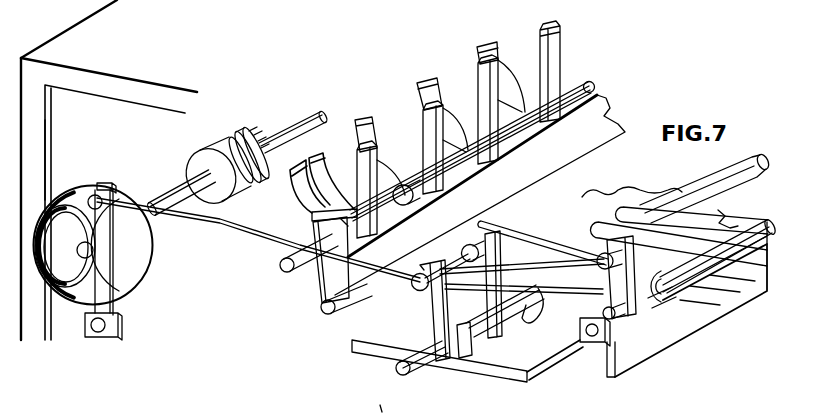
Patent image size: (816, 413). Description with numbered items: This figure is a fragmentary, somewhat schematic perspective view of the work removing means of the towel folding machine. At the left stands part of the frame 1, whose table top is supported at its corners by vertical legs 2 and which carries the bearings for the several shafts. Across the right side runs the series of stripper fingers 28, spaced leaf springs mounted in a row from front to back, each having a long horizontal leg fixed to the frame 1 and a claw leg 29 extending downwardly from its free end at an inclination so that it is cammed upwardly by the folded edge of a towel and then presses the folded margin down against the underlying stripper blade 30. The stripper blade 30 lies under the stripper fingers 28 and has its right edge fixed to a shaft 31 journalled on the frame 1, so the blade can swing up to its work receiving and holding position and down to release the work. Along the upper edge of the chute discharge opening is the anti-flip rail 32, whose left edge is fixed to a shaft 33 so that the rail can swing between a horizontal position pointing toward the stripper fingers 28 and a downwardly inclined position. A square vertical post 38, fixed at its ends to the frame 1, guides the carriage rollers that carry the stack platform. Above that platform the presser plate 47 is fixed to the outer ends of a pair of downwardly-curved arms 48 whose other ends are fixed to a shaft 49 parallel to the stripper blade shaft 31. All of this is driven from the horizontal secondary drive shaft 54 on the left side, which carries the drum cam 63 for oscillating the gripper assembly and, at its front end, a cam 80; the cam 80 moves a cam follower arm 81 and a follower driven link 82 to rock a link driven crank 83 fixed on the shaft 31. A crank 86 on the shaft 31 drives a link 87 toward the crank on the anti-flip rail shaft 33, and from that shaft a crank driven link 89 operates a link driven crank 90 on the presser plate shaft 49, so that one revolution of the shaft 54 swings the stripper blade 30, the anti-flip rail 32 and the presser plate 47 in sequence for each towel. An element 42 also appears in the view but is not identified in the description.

The frame 1 is at (163, 17).
The vertical legs 2 is at (39, 158).
The stripper fingers 28 is at (732, 213).
The claw leg 29 is at (616, 214).
The stripper blade 30 is at (540, 313).
The stripper blade shaft 31 is at (420, 373).
The anti-flip rail 32 is at (583, 143).
The anti-flip rail shaft 33 is at (286, 268).
The vertical post 38 is at (328, 279).
The base 42 is at (377, 409).
The presser plate 47 is at (507, 367).
The downwardly-curved arms 48 is at (506, 240).
The presser plate shaft 49 is at (690, 282).
The secondary drive shaft 54 is at (162, 192).
The drum cam 63 is at (241, 190).
The cam 80 is at (133, 260).
The cam follower arm 81 is at (107, 291).
The follower driven link 82 is at (230, 231).
The link driven crank 83 is at (432, 316).
The crank 86 is at (498, 328).
The crank driven link 87 is at (368, 308).
The crank driven link 89 is at (556, 266).
The link driven crank 90 is at (625, 320).